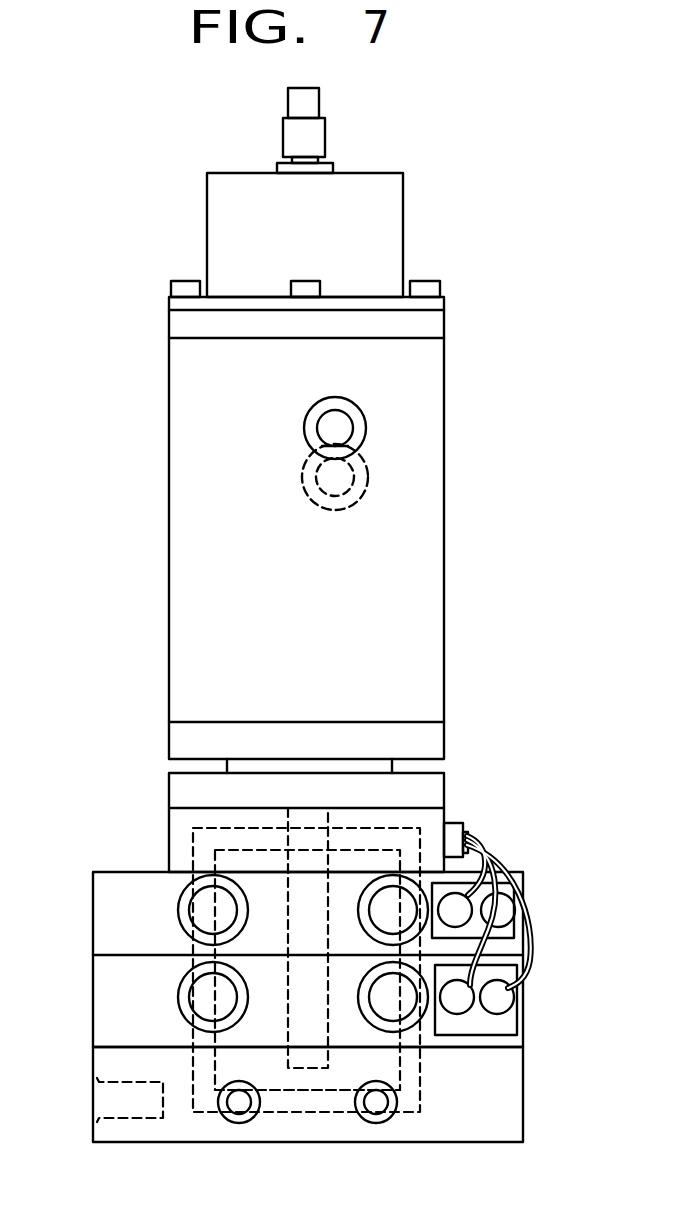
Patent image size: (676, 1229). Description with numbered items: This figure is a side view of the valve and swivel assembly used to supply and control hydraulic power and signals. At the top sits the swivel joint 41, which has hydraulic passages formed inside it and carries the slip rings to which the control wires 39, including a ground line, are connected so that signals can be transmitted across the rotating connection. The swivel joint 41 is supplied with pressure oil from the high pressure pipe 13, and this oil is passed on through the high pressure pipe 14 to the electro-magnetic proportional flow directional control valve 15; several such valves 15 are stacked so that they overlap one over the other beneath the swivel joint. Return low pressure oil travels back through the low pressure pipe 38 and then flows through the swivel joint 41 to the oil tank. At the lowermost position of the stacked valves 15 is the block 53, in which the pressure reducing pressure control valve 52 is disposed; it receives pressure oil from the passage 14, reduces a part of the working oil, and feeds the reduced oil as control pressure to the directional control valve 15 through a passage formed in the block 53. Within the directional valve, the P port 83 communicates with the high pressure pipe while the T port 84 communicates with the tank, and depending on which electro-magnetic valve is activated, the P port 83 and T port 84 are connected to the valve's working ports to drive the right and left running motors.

The high pressure pipe 13 is at (362, 492).
The high pressure pipe 14 is at (307, 1117).
The electro-magnetic proportional flow directional control valve 15 is at (93, 890).
The low pressure pipe 38 is at (362, 421).
The control wires 39 is at (493, 855).
The swivel joint 41 is at (443, 437).
The pressure reducing pressure control valve 52 is at (103, 1100).
The block 53 is at (523, 1122).
The P port 83 is at (396, 911).
The T port 84 is at (203, 872).